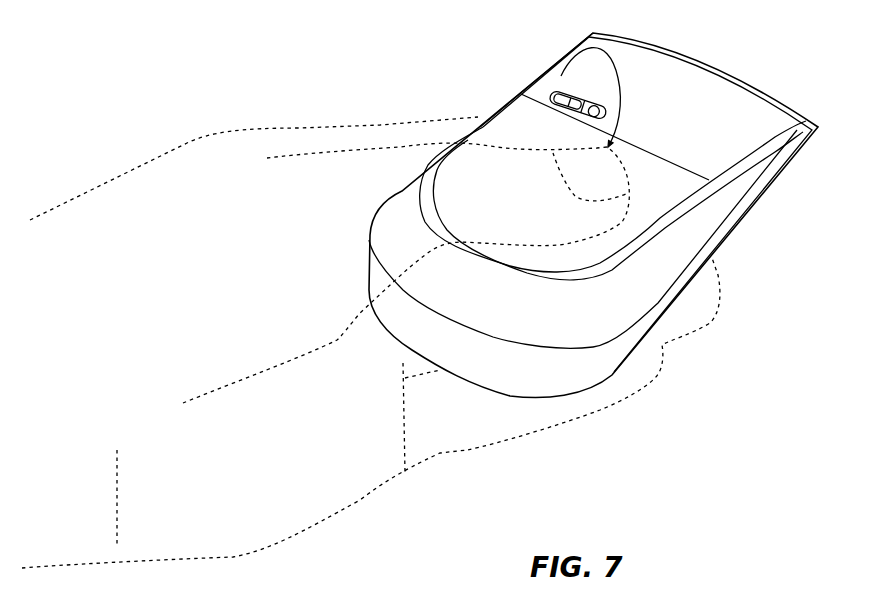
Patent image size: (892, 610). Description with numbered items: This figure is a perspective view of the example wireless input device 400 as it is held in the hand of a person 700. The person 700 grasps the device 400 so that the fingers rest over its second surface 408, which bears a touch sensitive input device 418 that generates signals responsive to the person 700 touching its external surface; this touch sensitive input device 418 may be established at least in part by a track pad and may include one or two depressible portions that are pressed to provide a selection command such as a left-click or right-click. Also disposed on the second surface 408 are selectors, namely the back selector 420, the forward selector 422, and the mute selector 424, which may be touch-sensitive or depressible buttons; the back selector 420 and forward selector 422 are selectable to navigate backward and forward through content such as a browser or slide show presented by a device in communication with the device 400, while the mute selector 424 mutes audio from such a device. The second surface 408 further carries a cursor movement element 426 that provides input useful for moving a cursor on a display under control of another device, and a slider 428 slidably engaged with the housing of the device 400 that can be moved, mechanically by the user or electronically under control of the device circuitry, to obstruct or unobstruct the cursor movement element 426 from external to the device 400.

The wireless input device 400 is at (716, 68).
The second surface 408 is at (747, 98).
The touch sensitive input device 418 is at (647, 207).
The forward selector 422 is at (686, 182).
The mute selector 424 is at (590, 37).
The back selector 420 is at (540, 116).
The slider 428 is at (590, 96).
The cursor movement element 426 is at (550, 92).
The person 700 is at (218, 204).